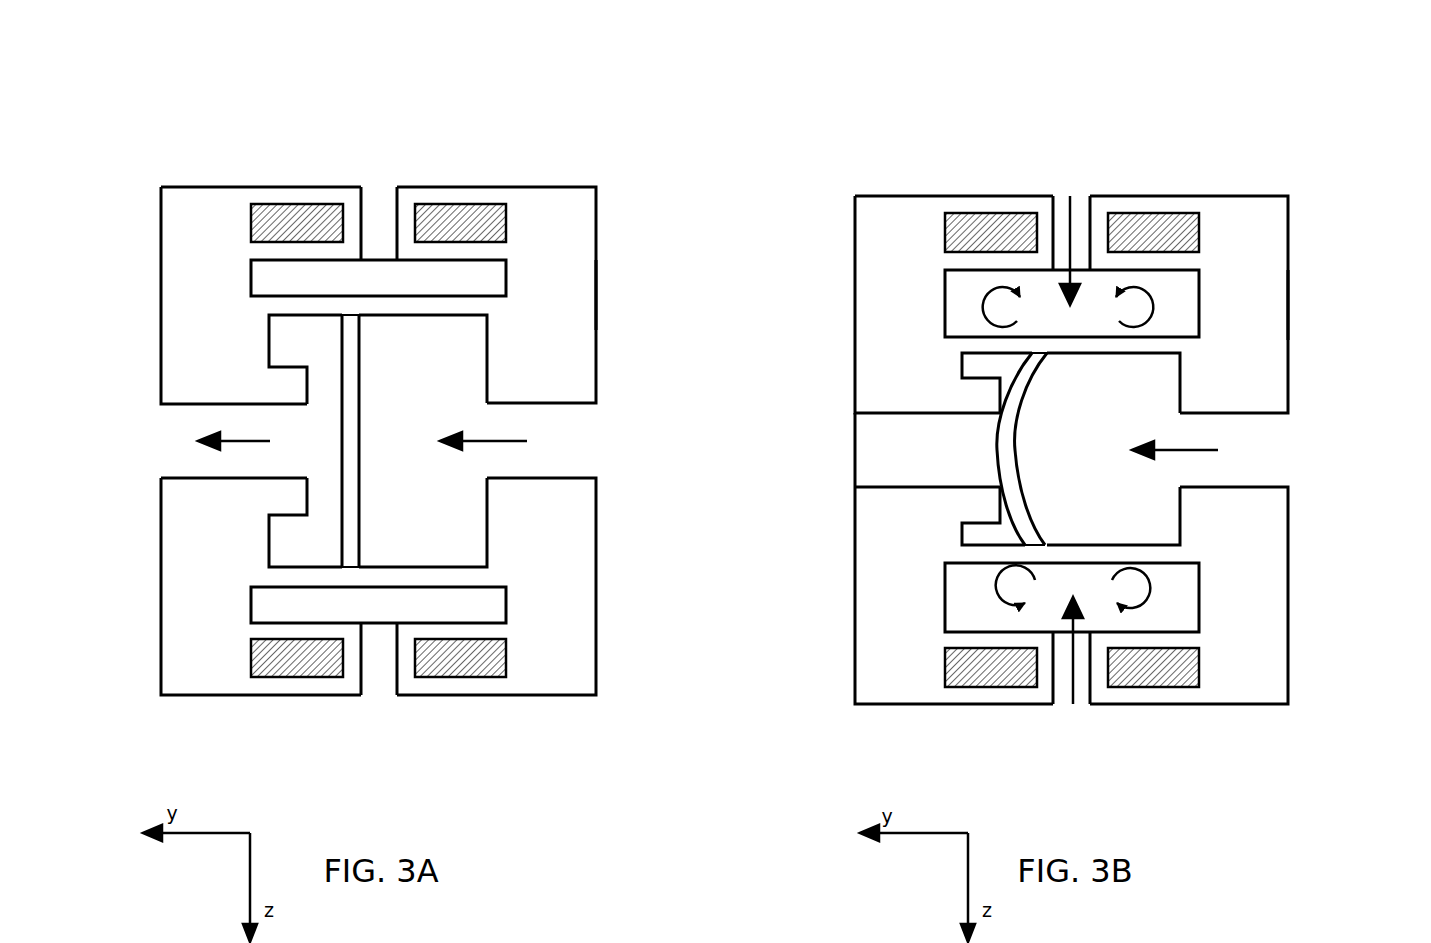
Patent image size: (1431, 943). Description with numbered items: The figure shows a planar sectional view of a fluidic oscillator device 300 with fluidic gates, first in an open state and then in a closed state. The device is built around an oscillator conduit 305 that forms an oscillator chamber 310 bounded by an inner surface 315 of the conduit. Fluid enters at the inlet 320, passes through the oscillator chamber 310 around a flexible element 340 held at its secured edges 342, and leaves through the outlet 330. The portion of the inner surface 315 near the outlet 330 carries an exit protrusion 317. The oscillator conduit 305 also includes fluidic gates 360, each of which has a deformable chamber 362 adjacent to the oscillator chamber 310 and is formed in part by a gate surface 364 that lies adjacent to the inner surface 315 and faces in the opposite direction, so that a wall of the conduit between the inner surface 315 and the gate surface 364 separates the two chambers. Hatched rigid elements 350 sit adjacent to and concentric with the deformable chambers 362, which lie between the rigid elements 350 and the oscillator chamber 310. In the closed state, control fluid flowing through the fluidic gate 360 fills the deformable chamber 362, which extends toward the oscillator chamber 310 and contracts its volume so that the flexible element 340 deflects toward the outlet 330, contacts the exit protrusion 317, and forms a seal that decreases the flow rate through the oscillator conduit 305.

In FIG. 3A, the fluidic oscillator 300 is at (87, 85).
In FIG. 3B, the fluidic oscillator 300 is at (740, 86).
In FIG. 3A, the oscillator conduit 305 is at (578, 268).
In FIG. 3B, the oscillator conduit 305 is at (1245, 267).
In FIG. 3A, the oscillator chamber 310 is at (478, 388).
In FIG. 3B, the oscillator chamber 310 is at (1160, 400).
In FIG. 3A, the inner surface 315 is at (433, 567).
In FIG. 3B, the inner surface 315 is at (1130, 545).
In FIG. 3A, the exit protrusion 317 is at (307, 497).
In FIG. 3B, the exit protrusion 317 is at (1000, 505).
In FIG. 3A, the inlet 320 is at (570, 423).
In FIG. 3B, the inlet 320 is at (1283, 427).
In FIG. 3A, the outlet 330 is at (162, 450).
In FIG. 3B, the outlet 330 is at (873, 423).
In FIG. 3A, the flexible element 340 is at (362, 477).
In FIG. 3B, the flexible element 340 is at (1018, 467).
In FIG. 3A, the secured edges 342 is at (359, 567).
In FIG. 3B, the secured edges 342 is at (1030, 545).
In FIG. 3A, the rigid element 350 is at (633, 717).
In FIG. 3B, the rigid element 350 is at (943, 223).
In FIG. 3A, the fluidic gate 360 is at (378, 205).
In FIG. 3B, the fluidic gate 360 is at (1058, 197).
In FIG. 3A, the deformable chamber 362 is at (468, 278).
In FIG. 3B, the deformable chamber 362 is at (1167, 282).
In FIG. 3A, the gate surface 364 is at (265, 588).
In FIG. 3B, the gate surface 364 is at (955, 560).